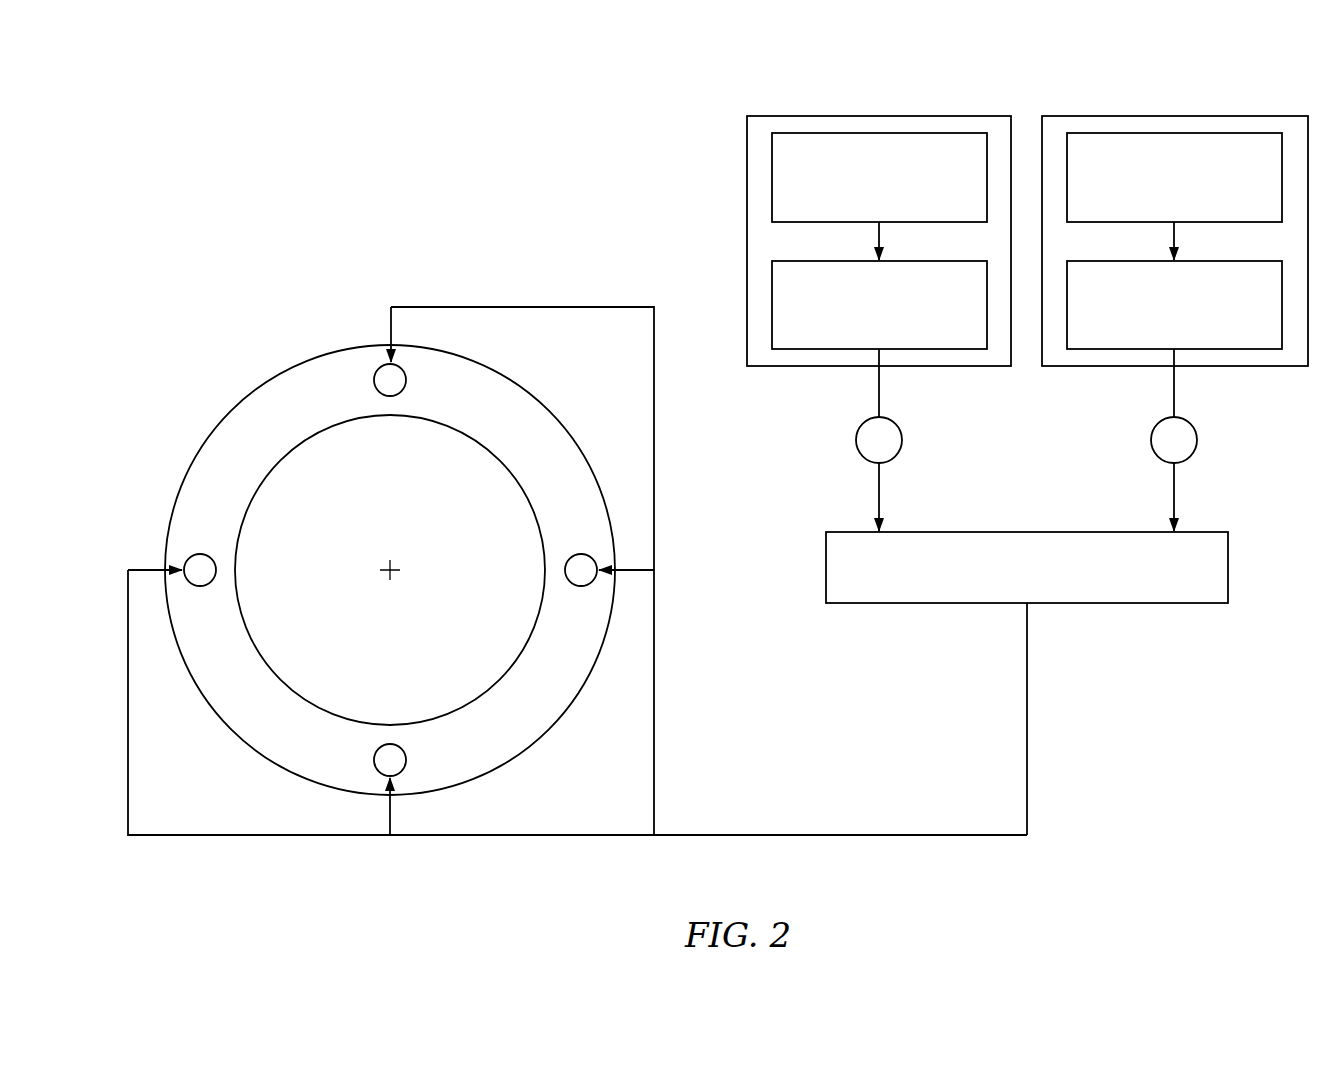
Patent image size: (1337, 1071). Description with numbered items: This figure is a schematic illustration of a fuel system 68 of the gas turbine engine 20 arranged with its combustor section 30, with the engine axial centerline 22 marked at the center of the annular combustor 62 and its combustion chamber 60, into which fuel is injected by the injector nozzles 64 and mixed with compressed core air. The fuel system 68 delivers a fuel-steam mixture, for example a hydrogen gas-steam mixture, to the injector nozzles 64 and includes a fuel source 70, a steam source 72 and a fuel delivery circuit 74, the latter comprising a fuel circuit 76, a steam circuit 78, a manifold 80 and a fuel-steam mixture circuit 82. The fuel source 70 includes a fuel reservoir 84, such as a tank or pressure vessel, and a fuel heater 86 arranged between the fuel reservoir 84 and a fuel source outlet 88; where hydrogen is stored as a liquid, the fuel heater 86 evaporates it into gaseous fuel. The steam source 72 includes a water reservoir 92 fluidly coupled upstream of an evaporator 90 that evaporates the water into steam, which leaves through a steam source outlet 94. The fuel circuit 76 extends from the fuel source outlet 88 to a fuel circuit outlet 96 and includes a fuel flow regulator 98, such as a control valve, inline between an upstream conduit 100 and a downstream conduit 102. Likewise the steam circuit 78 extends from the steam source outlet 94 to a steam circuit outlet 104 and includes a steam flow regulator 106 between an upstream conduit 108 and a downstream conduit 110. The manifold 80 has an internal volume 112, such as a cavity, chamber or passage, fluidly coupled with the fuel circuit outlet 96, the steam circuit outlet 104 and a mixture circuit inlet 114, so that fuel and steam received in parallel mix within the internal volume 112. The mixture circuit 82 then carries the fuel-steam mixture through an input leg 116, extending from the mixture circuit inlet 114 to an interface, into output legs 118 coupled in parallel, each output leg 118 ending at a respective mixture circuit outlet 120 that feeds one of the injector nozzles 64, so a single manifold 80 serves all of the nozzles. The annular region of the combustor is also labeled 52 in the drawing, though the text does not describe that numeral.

The gas turbine engine 20 is at (235, 138).
The axial centerline 22 is at (392, 578).
The combustor section 30 is at (265, 337).
The annular region 52 is at (225, 465).
The combustion chamber 60 is at (260, 442).
The combustor 62 is at (330, 347).
The fuel injector nozzles 64 is at (390, 397).
The fuel system 68 is at (695, 140).
The fuel source 70 is at (885, 112).
The steam source 72 is at (1187, 112).
The fuel delivery circuit 74 is at (1163, 756).
The fuel circuit 76 is at (826, 438).
The steam circuit 78 is at (1226, 440).
The manifold 80 is at (1238, 568).
The fuel-steam mixture circuit 82 is at (922, 847).
The fuel reservoir 84 is at (866, 208).
The fuel heater 86 is at (866, 335).
The fuel source outlet 88 is at (880, 370).
The evaporator 90 is at (1161, 335).
The water reservoir 92 is at (1161, 208).
The steam source outlet 94 is at (1175, 370).
The fuel circuit outlet 96 is at (887, 528).
The fuel flow regulator 98 is at (902, 440).
The upstream conduit 100 is at (878, 388).
The downstream conduit 102 is at (878, 492).
The steam circuit outlet 104 is at (1182, 528).
The steam flow regulator 106 is at (1151, 440).
The upstream conduit 108 is at (1173, 388).
The downstream conduit 110 is at (1173, 492).
The internal volume 112 is at (1070, 583).
The mixture circuit inlet 114 is at (1029, 606).
The input leg 116 is at (1029, 725).
The output legs 118 is at (393, 312).
The mixture circuit outlets 120 is at (402, 368).